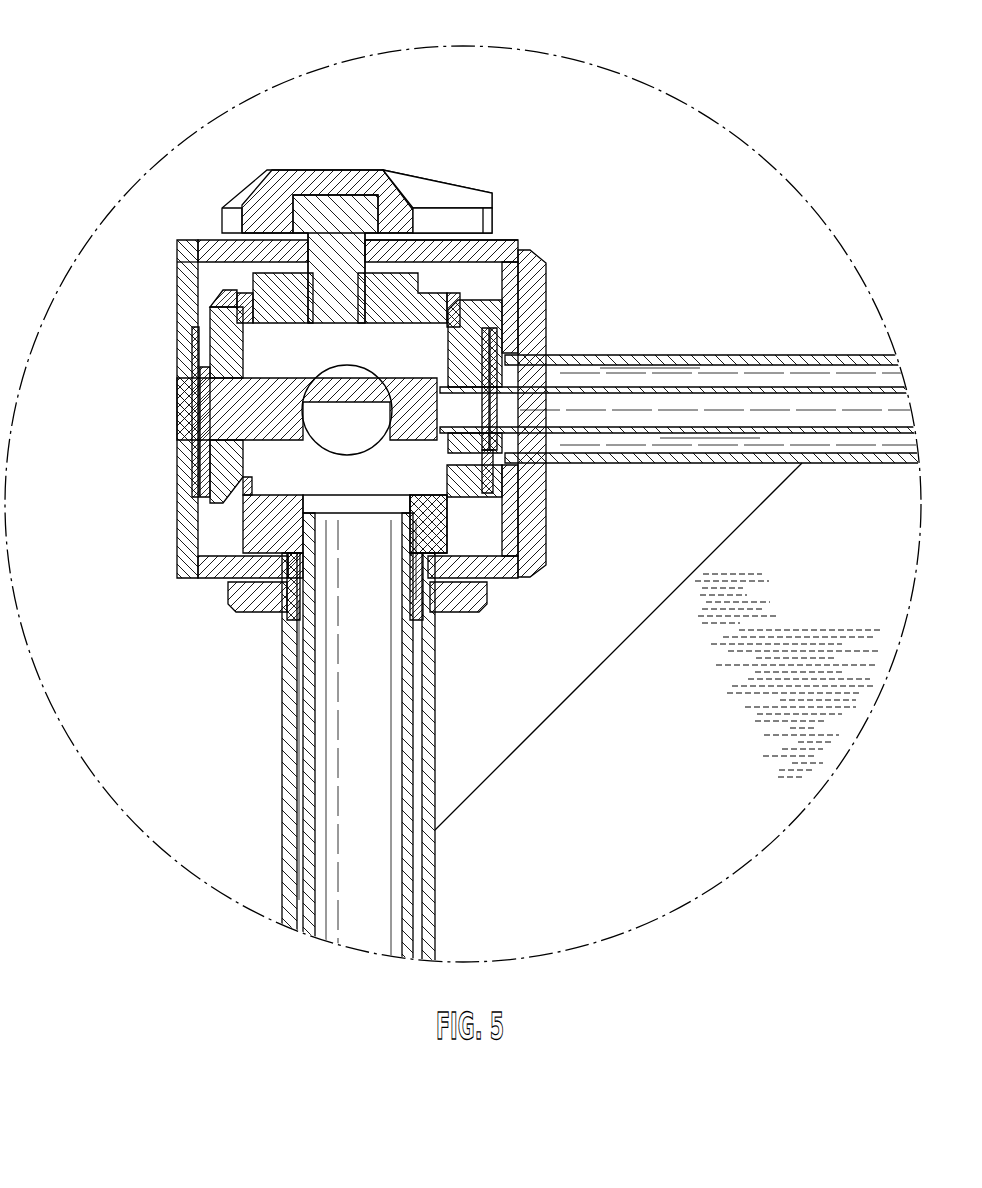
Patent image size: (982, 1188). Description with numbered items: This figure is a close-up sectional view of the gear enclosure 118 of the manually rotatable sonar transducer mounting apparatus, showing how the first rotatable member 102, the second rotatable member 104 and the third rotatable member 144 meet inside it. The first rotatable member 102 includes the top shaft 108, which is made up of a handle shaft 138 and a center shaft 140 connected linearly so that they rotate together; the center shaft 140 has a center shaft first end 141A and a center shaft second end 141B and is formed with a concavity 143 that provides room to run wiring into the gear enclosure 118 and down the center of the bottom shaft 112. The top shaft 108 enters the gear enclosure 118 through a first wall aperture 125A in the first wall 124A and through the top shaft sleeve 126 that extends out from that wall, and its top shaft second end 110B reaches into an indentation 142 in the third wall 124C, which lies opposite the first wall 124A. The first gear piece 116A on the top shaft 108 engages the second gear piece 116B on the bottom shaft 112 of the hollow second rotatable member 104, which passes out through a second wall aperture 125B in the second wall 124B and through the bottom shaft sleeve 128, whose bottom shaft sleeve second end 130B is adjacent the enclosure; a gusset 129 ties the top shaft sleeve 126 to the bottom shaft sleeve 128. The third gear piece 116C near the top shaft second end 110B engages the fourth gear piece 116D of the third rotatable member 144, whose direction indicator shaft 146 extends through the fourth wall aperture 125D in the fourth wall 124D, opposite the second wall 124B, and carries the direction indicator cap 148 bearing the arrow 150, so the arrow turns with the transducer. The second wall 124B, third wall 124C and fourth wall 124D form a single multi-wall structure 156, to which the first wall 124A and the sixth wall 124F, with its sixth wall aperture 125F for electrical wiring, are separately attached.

The first rotatable member 102 is at (812, 392).
The second rotatable member 104 is at (308, 768).
The top shaft 108 is at (730, 390).
The top shaft second end 110B is at (195, 372).
The bottom shaft 112 is at (310, 855).
The first gear piece 116A is at (463, 330).
The second gear piece 116B is at (443, 523).
The third gear piece 116C is at (225, 505).
The fourth gear piece 116D is at (257, 303).
The gear enclosure 118 is at (205, 255).
The first wall 124A is at (530, 513).
The second wall 124B is at (240, 598).
The third wall 124C is at (180, 487).
The fourth wall 124D is at (447, 247).
The sixth wall 124F is at (275, 515).
The first wall aperture 125A is at (520, 353).
The second wall aperture 125B is at (270, 578).
The fourth wall aperture 125D is at (297, 250).
The sixth wall aperture 125F is at (248, 530).
The top shaft sleeve 126 is at (637, 363).
The bottom shaft sleeve 128 is at (290, 752).
The gusset 129 is at (703, 845).
The bottom shaft sleeve second end 130B is at (317, 450).
The handle shaft 138 is at (695, 427).
The center shaft 140 is at (237, 417).
The center shaft first end 141A is at (497, 410).
The center shaft second end 141B is at (192, 400).
The indentation 142 is at (237, 437).
The concavity 143 is at (410, 400).
The third rotatable member 144 is at (347, 253).
The direction indicator shaft 146 is at (317, 223).
The direction indicator cap 148 is at (283, 197).
The arrow 150 is at (470, 198).
The multi-wall structure 156 is at (188, 290).